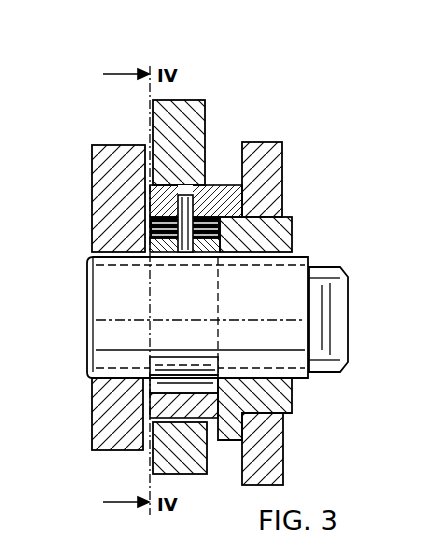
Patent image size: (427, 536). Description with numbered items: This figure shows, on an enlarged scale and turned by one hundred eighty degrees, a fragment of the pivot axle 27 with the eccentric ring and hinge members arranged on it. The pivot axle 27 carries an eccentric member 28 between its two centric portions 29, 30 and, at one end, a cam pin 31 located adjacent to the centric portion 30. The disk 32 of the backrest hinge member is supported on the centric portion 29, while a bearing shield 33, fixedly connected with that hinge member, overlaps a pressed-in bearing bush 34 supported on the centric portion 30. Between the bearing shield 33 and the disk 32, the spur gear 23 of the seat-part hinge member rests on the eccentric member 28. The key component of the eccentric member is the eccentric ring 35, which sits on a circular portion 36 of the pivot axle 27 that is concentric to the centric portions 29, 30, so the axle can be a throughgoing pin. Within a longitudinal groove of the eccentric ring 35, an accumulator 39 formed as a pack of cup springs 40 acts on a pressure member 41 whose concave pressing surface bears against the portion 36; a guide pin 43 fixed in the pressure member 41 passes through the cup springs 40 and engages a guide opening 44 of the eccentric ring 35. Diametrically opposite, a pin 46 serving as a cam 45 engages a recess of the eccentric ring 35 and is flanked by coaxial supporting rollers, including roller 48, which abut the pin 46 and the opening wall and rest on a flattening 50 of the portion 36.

The spur gear 23 is at (183, 122).
The pivot axle 27 is at (87, 300).
The eccentric member 28 is at (170, 183).
The centric portion 29 is at (115, 275).
The centric portion 30 is at (295, 375).
The cam pin 31 is at (333, 338).
The disk 32 is at (113, 393).
The bearing shield 33 is at (258, 158).
The bearing bush 34 is at (290, 412).
The eccentric ring 35 is at (157, 200).
The portion 36 is at (163, 328).
The accumulator 39 is at (222, 207).
The cup springs 40 is at (170, 225).
The pressure member 41 is at (218, 243).
The guide pin 43 is at (236, 211).
The guide opening 44 is at (185, 208).
The cam 45 is at (208, 415).
The pin 46 is at (170, 402).
The supporting roller 48 is at (217, 367).
The flattening 50 is at (193, 352).